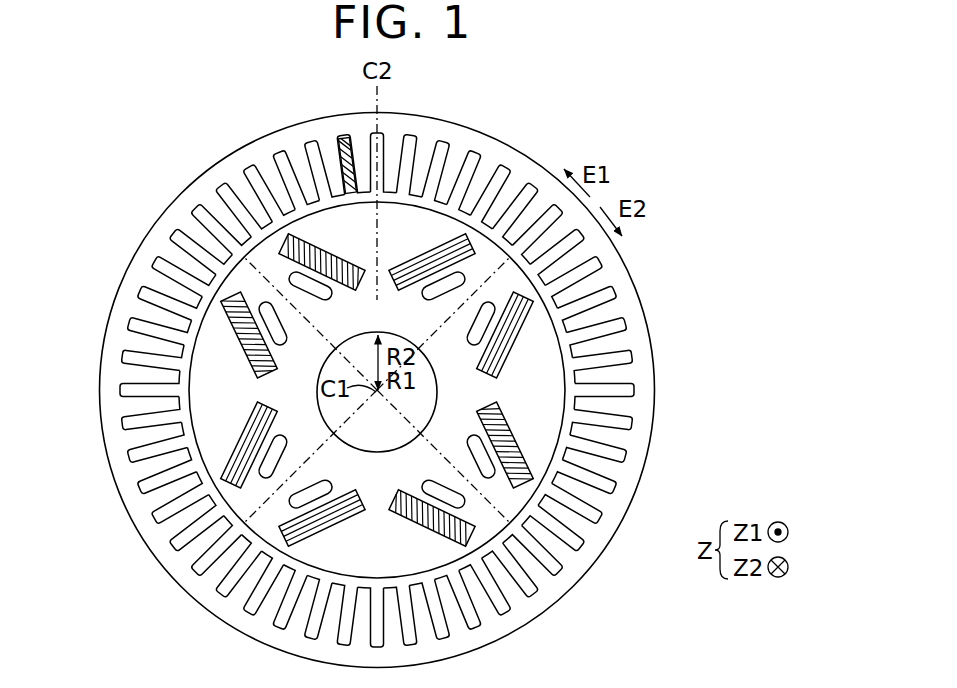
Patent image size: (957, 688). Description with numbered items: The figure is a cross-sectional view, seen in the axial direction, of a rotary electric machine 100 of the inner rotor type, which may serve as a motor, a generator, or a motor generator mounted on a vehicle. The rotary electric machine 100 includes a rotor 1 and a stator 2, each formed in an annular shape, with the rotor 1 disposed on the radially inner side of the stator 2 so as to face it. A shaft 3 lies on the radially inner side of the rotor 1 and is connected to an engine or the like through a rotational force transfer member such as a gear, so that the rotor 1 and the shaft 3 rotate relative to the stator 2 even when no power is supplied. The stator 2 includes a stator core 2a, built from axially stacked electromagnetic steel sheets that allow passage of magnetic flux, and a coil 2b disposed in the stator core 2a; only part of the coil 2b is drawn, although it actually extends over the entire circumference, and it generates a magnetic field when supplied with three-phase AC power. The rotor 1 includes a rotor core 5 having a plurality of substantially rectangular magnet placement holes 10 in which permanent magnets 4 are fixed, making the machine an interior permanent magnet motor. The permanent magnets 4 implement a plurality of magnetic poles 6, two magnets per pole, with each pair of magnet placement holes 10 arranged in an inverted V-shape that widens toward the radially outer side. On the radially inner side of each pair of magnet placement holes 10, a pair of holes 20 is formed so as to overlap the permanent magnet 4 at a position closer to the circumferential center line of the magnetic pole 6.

The rotary electric machine 100 is at (103, 108).
The rotor 1 is at (197, 318).
The stator 2 is at (171, 200).
The stator core 2a is at (208, 182).
The coil 2b is at (348, 135).
The shaft 3 is at (400, 437).
The permanent magnet 4 is at (337, 246).
The rotor core 5 is at (203, 390).
The magnetic pole 6 is at (219, 422).
The magnet placement hole 10 is at (300, 228).
The hole 20 is at (312, 293).